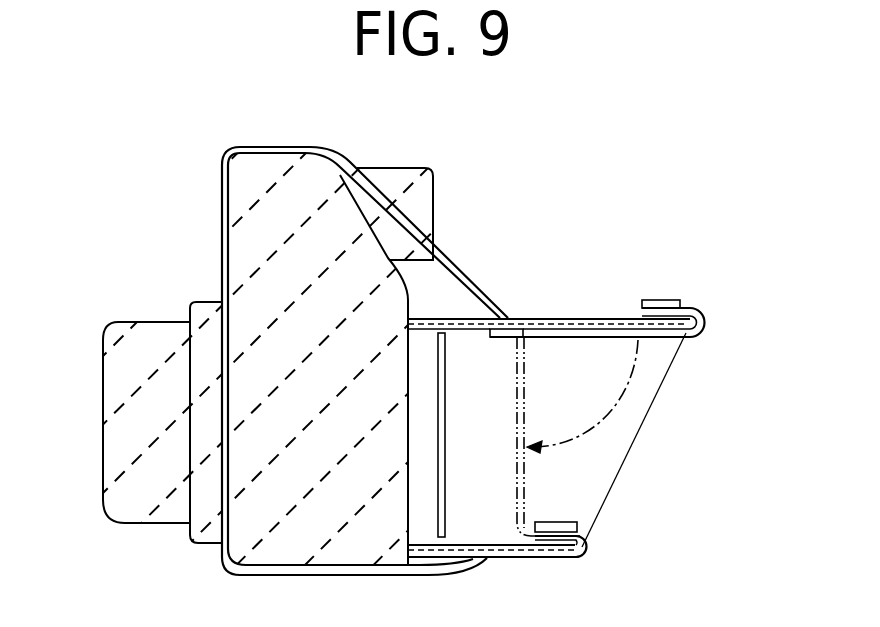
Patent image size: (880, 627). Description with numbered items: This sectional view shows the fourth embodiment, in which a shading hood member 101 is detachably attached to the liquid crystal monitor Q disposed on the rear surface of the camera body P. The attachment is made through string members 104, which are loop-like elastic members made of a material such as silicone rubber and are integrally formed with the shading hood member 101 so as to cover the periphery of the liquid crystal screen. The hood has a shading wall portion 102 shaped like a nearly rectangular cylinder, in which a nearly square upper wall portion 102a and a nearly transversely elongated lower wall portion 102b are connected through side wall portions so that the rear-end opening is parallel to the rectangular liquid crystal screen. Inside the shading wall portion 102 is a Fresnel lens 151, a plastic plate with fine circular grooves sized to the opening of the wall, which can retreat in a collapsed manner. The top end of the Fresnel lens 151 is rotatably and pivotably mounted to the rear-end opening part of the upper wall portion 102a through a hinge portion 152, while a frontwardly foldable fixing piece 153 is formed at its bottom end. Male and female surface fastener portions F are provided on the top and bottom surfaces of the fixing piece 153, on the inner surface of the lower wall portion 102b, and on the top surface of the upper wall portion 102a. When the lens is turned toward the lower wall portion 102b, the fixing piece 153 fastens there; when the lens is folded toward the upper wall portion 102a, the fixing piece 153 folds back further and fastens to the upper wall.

The shading hood member 101 is at (571, 231).
The shading wall portion 102 is at (556, 436).
The upper wall portion 102a is at (600, 318).
The lower wall portion 102b is at (518, 558).
The string members 104 is at (228, 187).
The Fresnel lens 151 is at (528, 475).
The hinge portion 152 is at (521, 318).
The fixing piece 153 is at (688, 308).
The surface fastener portion F is at (660, 302).
The camera body P is at (143, 326).
The liquid crystal monitor Q is at (447, 483).